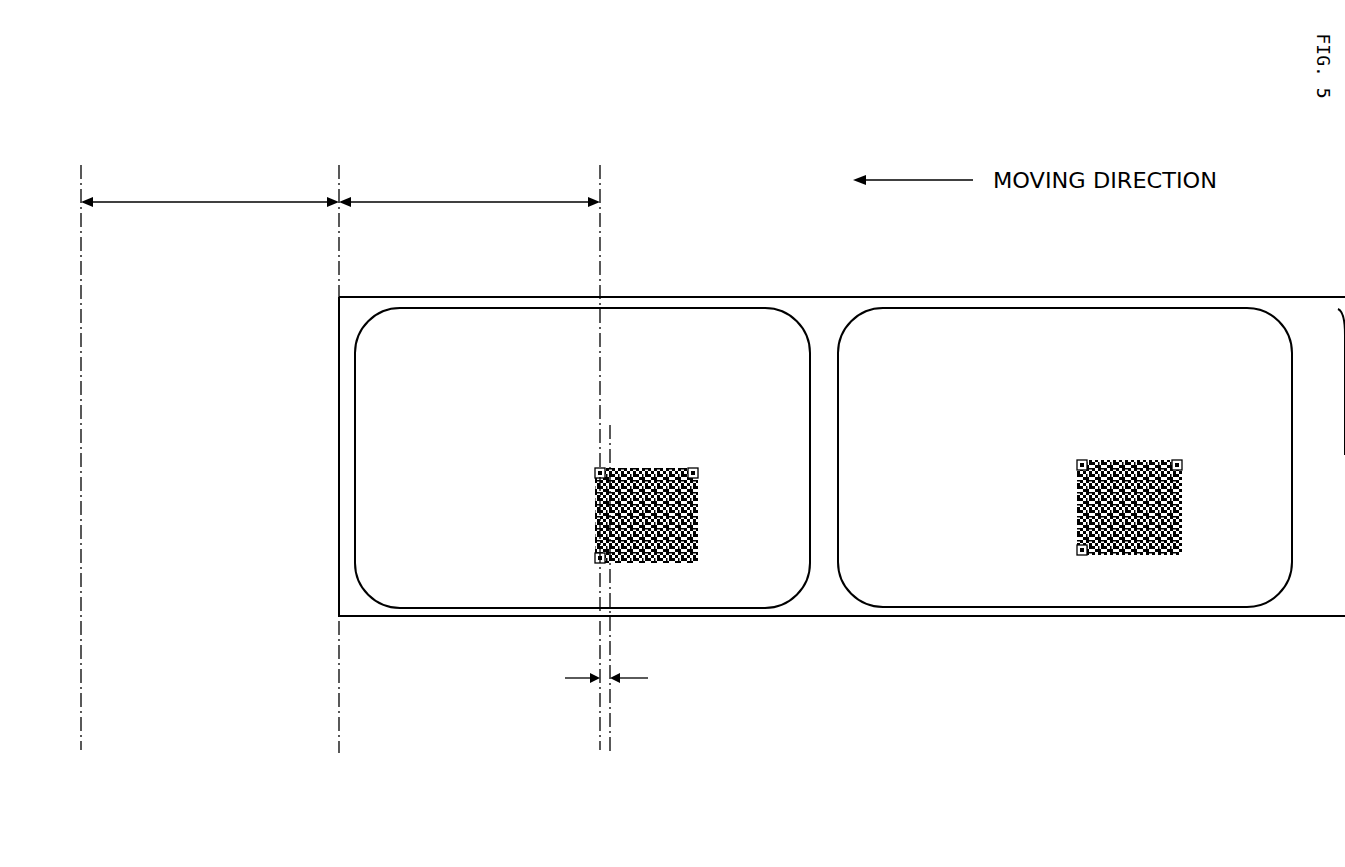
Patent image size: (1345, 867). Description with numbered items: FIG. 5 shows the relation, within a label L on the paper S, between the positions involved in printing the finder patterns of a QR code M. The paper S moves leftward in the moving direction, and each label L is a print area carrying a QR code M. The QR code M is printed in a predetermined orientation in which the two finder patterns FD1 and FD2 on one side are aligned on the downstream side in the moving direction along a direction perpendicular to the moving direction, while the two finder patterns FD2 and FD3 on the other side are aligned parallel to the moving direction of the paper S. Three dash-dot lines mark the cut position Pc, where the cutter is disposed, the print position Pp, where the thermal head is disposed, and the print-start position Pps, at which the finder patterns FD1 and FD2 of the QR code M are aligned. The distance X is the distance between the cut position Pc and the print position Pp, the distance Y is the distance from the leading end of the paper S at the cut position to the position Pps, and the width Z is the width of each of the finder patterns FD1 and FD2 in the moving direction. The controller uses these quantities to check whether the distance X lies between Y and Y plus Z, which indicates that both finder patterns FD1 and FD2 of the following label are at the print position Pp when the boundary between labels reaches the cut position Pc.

The paper S is at (1080, 627).
The label L is at (443, 582).
The QR code M is at (670, 563).
The finder pattern FD1 is at (595, 557).
The finder pattern FD2 is at (595, 474).
The finder pattern FD3 is at (698, 472).
The cut position Pc is at (75, 438).
The print position Pp is at (326, 440).
The print-start position Pps is at (596, 430).
The distance between cut position and print position X is at (210, 185).
The distance from leading end of paper to finder patterns Y is at (469, 187).
The width of finder pattern Z is at (606, 611).